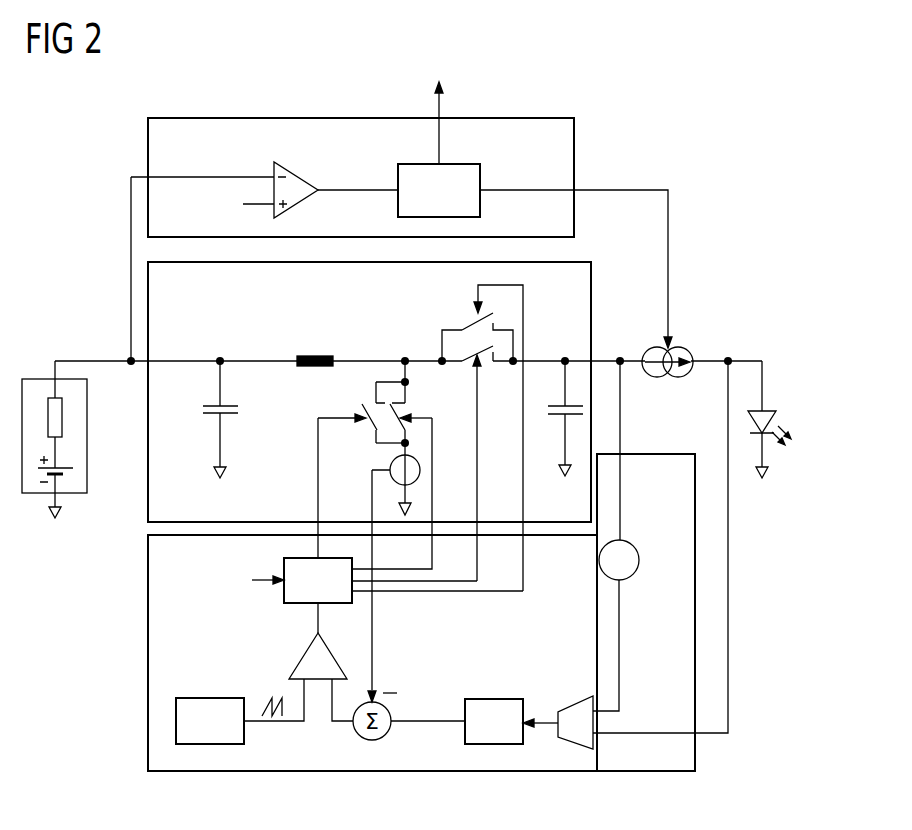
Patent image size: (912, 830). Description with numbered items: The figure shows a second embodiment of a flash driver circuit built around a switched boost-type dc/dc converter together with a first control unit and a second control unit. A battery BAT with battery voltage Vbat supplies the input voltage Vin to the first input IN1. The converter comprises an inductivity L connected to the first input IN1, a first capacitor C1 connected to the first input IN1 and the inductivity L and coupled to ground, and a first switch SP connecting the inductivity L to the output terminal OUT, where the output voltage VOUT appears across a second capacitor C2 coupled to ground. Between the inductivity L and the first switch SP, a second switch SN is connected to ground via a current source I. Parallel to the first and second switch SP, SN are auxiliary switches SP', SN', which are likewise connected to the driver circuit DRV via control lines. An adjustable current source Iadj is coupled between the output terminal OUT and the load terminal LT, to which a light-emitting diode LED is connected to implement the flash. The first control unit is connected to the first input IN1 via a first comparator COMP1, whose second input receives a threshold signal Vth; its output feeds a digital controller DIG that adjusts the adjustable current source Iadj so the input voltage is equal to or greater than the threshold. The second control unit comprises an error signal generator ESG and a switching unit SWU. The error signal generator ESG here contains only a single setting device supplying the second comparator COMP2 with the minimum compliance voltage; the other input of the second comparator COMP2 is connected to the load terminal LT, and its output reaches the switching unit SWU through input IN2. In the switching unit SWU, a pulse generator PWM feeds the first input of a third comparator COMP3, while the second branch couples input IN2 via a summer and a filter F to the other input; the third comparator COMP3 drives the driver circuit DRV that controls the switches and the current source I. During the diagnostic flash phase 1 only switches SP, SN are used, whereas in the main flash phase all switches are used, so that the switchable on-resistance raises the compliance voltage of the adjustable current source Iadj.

The first comparator COMP1 is at (312, 157).
The threshold signal Vth is at (227, 203).
The digital controller DIG is at (439, 190).
The switching unit SWU is at (240, 608).
The error signal generator ESG is at (650, 731).
The battery voltage Vbat is at (100, 347).
The first input IN1 is at (145, 364).
The input voltage Vin is at (269, 350).
The battery BAT is at (70, 493).
The first capacitor C1 is at (240, 412).
The inductivity L is at (313, 352).
The auxiliary switch SN' is at (345, 471).
The second switch SN is at (400, 477).
The current source I is at (388, 469).
The auxiliary switch SP' is at (437, 437).
The first switch SP is at (432, 463).
The output voltage VOUT is at (559, 350).
The second capacitor C2 is at (553, 420).
The output terminal OUT is at (591, 361).
The adjustable current source Iadj is at (678, 348).
The load terminal LT is at (676, 535).
The light-emitting diode LED is at (770, 409).
The driver circuit DRV is at (318, 580).
The diagnostic flash phase 1 is at (262, 582).
The third comparator COMP3 is at (300, 656).
The pulse generator PWM is at (229, 721).
The filter F is at (494, 721).
The second comparator COMP2 is at (578, 700).
The input IN2 is at (525, 727).